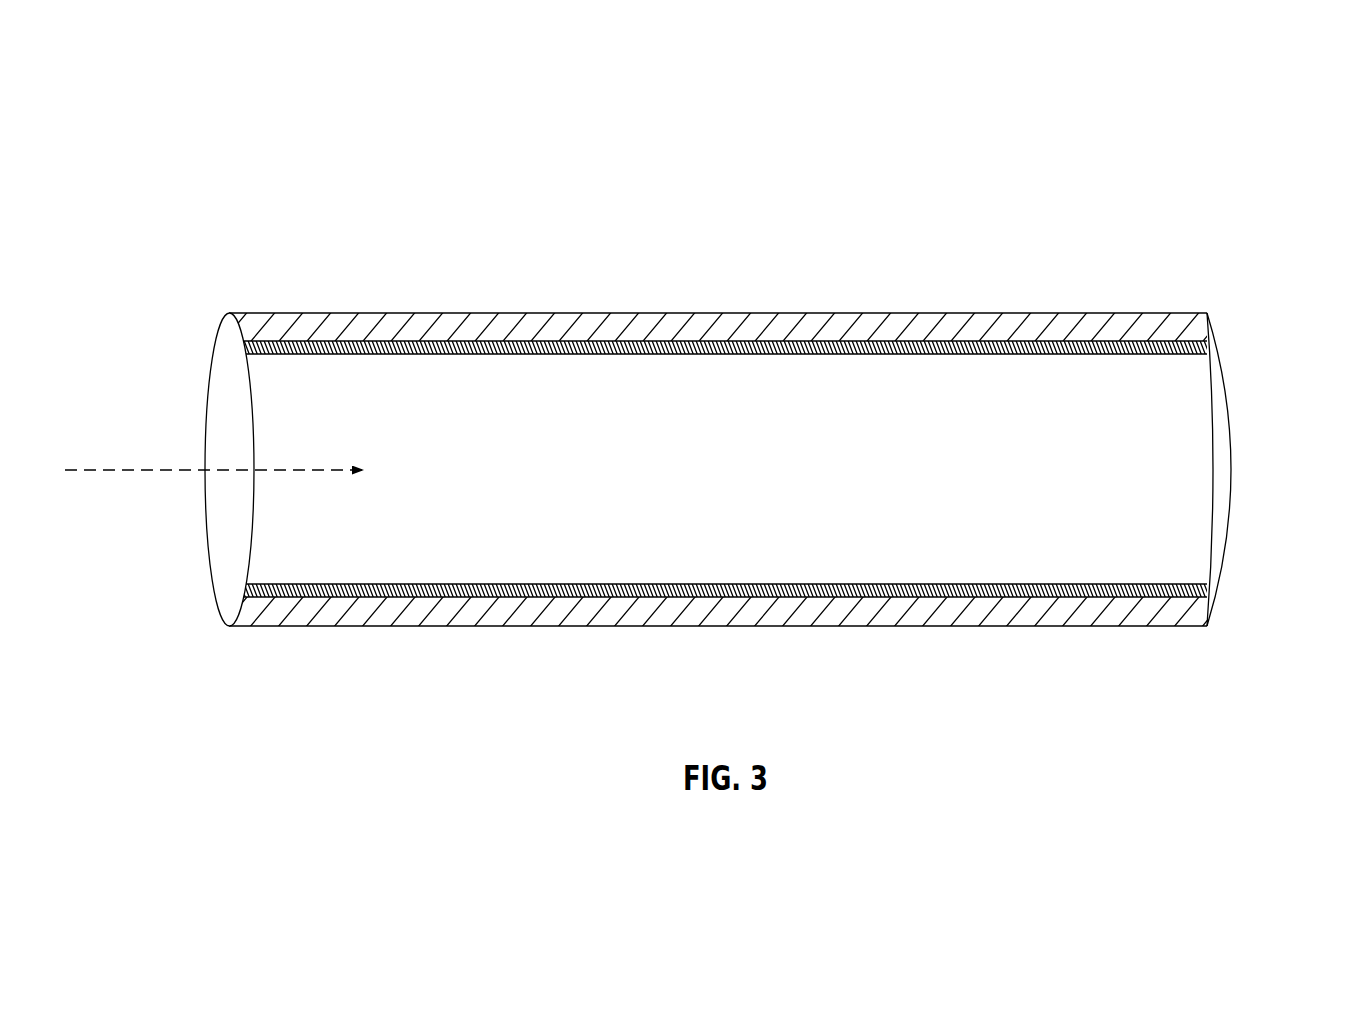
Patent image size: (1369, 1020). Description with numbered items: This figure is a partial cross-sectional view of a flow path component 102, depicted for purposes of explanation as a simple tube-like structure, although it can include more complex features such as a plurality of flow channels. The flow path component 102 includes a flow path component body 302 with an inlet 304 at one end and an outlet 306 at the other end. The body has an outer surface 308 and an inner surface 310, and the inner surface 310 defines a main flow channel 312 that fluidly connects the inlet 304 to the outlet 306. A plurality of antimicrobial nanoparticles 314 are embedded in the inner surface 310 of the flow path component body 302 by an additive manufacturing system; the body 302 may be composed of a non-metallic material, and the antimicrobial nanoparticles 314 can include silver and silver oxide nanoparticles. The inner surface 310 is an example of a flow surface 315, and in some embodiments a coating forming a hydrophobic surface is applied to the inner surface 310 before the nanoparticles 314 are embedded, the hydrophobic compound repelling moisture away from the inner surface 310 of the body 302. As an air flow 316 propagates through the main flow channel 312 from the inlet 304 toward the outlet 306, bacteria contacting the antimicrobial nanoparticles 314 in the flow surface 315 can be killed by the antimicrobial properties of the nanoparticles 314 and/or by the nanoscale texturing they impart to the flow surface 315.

The flow path component 102 is at (701, 351).
The flow path component body 302 is at (680, 333).
The inlet 304 is at (168, 380).
The outlet 306 is at (1252, 367).
The outer surface 308 is at (307, 313).
The inner surface 310 is at (573, 346).
The main flow channel 312 is at (898, 486).
The antimicrobial nanoparticles 314 is at (973, 348).
The flow surface 315 is at (1174, 360).
The air flow 316 is at (170, 473).